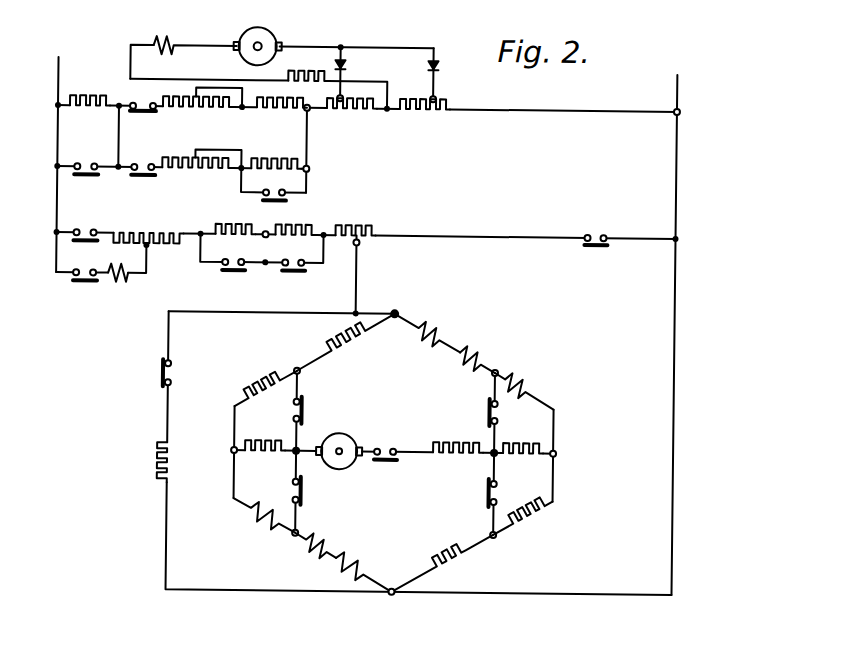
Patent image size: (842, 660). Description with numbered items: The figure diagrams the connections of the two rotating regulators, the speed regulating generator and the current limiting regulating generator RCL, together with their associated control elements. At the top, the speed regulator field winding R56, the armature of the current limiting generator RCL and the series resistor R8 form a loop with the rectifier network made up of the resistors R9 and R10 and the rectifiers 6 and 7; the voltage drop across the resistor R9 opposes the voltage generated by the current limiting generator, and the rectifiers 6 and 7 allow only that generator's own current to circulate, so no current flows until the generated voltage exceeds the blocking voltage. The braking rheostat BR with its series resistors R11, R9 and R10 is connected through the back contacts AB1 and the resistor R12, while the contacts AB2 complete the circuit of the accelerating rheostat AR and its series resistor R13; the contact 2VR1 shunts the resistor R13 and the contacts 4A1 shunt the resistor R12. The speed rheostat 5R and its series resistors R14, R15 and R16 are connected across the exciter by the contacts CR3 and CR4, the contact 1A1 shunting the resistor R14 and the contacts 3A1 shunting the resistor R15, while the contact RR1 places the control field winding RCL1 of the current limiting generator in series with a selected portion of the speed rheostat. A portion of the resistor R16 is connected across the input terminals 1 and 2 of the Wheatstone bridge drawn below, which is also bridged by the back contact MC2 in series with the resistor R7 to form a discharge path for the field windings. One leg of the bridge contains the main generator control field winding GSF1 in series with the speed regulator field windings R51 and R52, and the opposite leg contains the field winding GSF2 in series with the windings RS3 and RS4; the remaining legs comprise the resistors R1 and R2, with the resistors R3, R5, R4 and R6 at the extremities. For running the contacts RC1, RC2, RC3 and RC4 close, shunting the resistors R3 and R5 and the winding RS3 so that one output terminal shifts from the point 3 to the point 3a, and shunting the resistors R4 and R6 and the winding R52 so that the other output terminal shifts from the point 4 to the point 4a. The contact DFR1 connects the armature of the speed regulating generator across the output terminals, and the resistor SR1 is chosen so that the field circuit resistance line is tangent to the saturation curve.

The speed regulating generator field winding R56 is at (195, 40).
The current limiting regulating generator RCL is at (280, 28).
The series resistor R8 is at (308, 70).
The rectifier 6 is at (345, 63).
The rectifier 7 is at (438, 63).
The resistor R12 is at (74, 103).
The back contacts of accelerating and braking relay AB1 is at (146, 97).
The braking rheostat BR is at (185, 106).
The resistor R11 is at (259, 108).
The resistor R9 is at (330, 108).
The resistor R10 is at (404, 108).
The contacts of auxiliary accelerating relay 4A1 is at (78, 178).
The contact members of accelerating and braking relay AB2 is at (147, 181).
The accelerating rheostat AR is at (190, 170).
The resistor R13 is at (297, 163).
The contact of voltage relay 2VR1 is at (277, 203).
The contact members of creep relay CR4 is at (88, 244).
The speed rheostat 5R is at (148, 247).
The resistor R14 is at (221, 234).
The resistor R15 is at (296, 225).
The resistor R16 is at (345, 235).
The contact of run relay RR1 is at (80, 283).
The control field winding of current limiting generator RCL1 is at (115, 281).
The contact of accelerating relay 1A1 is at (228, 272).
The contacts of relay 3A 3A1 is at (288, 272).
The contact members of creep relay CR3 is at (588, 244).
The input terminal of bridge circuit 1 is at (399, 309).
The resistor R1 is at (341, 329).
The main generator control field winding GSF1 is at (437, 331).
The speed regulating generator field winding R51 is at (479, 352).
The speed regulating generator field winding R52 is at (524, 383).
The back contact of main contactor MC2 is at (165, 375).
The resistor element R3 is at (264, 383).
The resistor R7 is at (158, 462).
The contact of run contactor RC2 is at (308, 406).
The contact of run contactor RC1 is at (308, 488).
The contact of run contactor RC3 is at (470, 412).
The contact of run contactor RC4 is at (488, 490).
The bridge output point 3 is at (235, 448).
The bridge output point 3a is at (297, 450).
The resistor element R5 is at (268, 432).
The contact of relay DFR DFR1 is at (385, 463).
The resistor SR1 is at (472, 440).
The resistor R6 is at (540, 440).
The bridge output point 4a is at (500, 450).
The bridge output point 4 is at (560, 448).
The speed regulating generator field winding RS3 is at (256, 523).
The speed regulating generator field winding RS4 is at (310, 548).
The main generator control field winding GSF2 is at (335, 572).
The resistor R2 is at (452, 562).
The resistor R4 is at (521, 523).
The input terminal of bridge circuit 2 is at (398, 591).